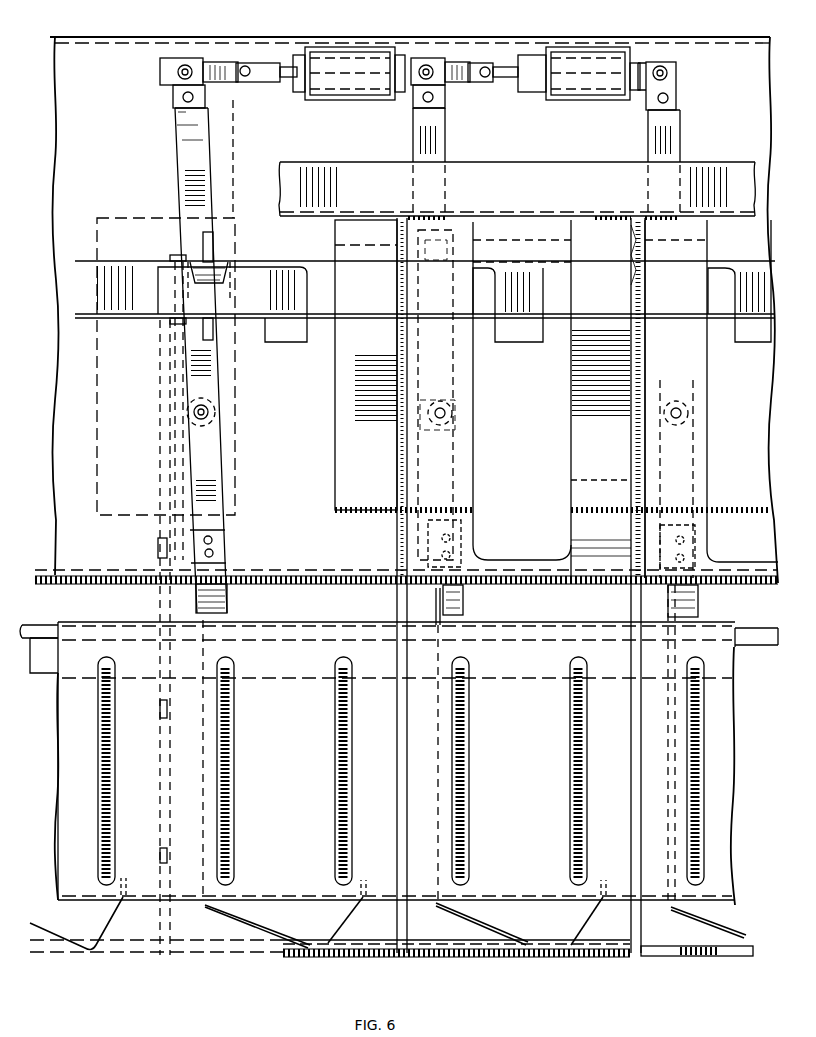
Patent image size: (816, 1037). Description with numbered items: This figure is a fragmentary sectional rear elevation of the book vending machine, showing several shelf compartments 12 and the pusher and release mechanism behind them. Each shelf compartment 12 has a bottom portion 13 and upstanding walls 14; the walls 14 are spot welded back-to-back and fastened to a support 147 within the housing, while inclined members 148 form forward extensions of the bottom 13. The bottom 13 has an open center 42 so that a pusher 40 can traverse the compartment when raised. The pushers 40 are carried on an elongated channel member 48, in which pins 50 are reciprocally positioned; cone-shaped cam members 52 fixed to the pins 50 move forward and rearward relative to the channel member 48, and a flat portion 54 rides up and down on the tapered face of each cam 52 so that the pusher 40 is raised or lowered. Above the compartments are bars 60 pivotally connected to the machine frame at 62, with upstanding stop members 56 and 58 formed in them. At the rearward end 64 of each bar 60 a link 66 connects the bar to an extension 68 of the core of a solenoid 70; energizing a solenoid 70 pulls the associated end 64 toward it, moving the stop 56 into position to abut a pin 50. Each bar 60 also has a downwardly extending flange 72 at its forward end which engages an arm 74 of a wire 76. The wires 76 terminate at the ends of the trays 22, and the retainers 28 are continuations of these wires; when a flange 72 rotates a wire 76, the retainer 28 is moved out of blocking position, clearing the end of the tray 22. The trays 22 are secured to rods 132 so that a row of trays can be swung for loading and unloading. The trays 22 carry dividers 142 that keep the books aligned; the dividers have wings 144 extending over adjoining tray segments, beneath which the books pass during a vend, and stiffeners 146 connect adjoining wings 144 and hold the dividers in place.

The shelf compartment 12 is at (513, 474).
The bottom portion 13 is at (345, 463).
The upstanding wall 14 is at (631, 478).
The tray 22 is at (503, 836).
The retainer 28 is at (268, 930).
The pusher 40 is at (292, 345).
The open center 42 is at (573, 490).
The elongated channel member 48 is at (87, 320).
The pin 50 is at (205, 246).
The cone-shaped cam member 52 is at (226, 262).
The flat portion 54 is at (225, 327).
The stop member 56 is at (178, 100).
The stop member 58 is at (222, 543).
The bar 60 is at (214, 456).
The pivotal connection 62 is at (215, 412).
The rearward end 64 is at (175, 62).
The link 66 is at (222, 66).
The extension 68 is at (270, 66).
The solenoid 70 is at (338, 60).
The flange 72 is at (228, 603).
The arm 74 is at (436, 605).
The wire 76 is at (198, 778).
The rod 132 is at (22, 632).
The divider 142 is at (400, 840).
The wing 144 is at (345, 957).
The stiffener 146 is at (408, 957).
The support 147 is at (522, 168).
The inclined member 148 is at (590, 540).